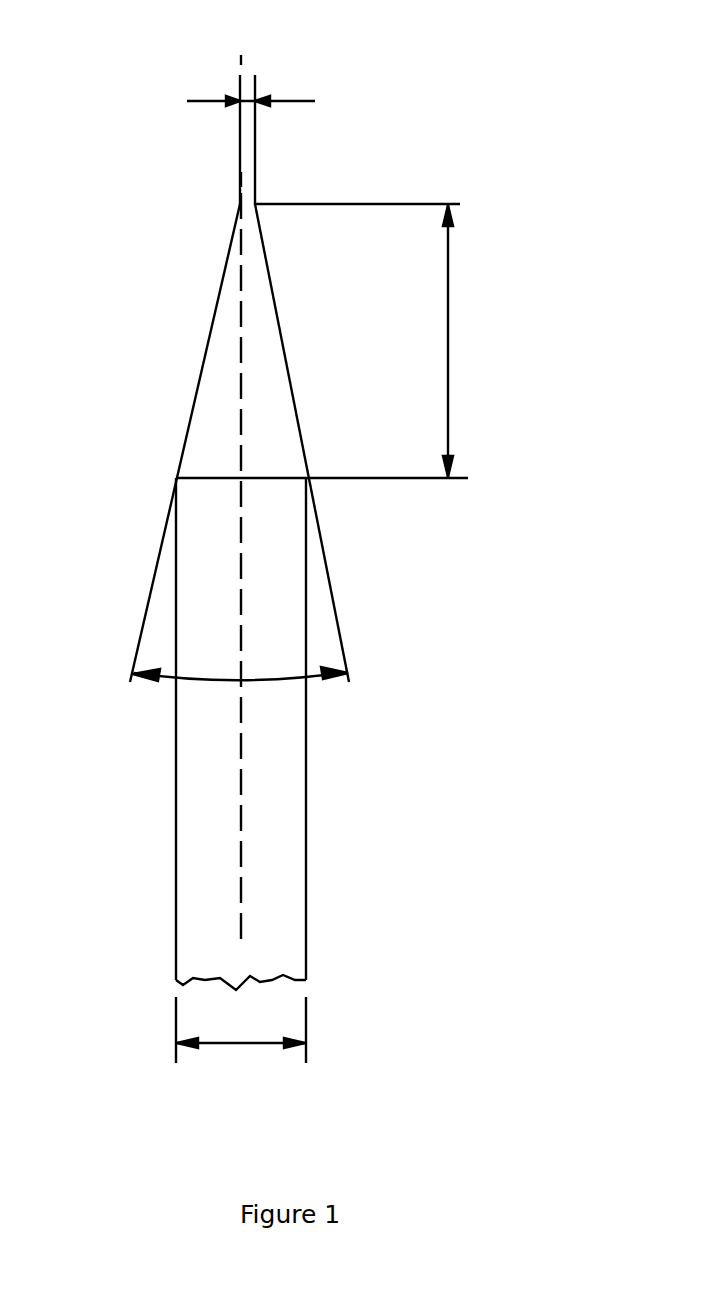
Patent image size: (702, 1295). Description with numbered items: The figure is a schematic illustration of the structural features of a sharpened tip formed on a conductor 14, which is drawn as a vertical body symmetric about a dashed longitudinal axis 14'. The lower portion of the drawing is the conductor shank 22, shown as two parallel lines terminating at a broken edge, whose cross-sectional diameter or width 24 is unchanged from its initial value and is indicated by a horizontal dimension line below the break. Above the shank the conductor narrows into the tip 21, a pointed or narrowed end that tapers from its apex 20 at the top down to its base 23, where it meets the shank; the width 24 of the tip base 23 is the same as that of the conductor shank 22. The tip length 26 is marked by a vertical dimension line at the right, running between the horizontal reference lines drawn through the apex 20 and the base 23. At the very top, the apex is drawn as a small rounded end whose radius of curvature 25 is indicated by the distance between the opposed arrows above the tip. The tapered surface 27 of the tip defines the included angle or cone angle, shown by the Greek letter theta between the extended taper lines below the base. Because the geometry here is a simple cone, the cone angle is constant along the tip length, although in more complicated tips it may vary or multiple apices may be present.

The conductor 14 is at (195, 734).
The longitudinal axis 14' is at (315, 497).
The apex 20 is at (258, 212).
The tip 21 is at (194, 352).
The conductor shank 22 is at (306, 842).
The base 23 is at (204, 477).
The cross-sectional diameter or width 24 is at (247, 1043).
The radius of curvature 25 is at (247, 75).
The tip length 26 is at (448, 353).
The tapered surface 27 is at (278, 330).